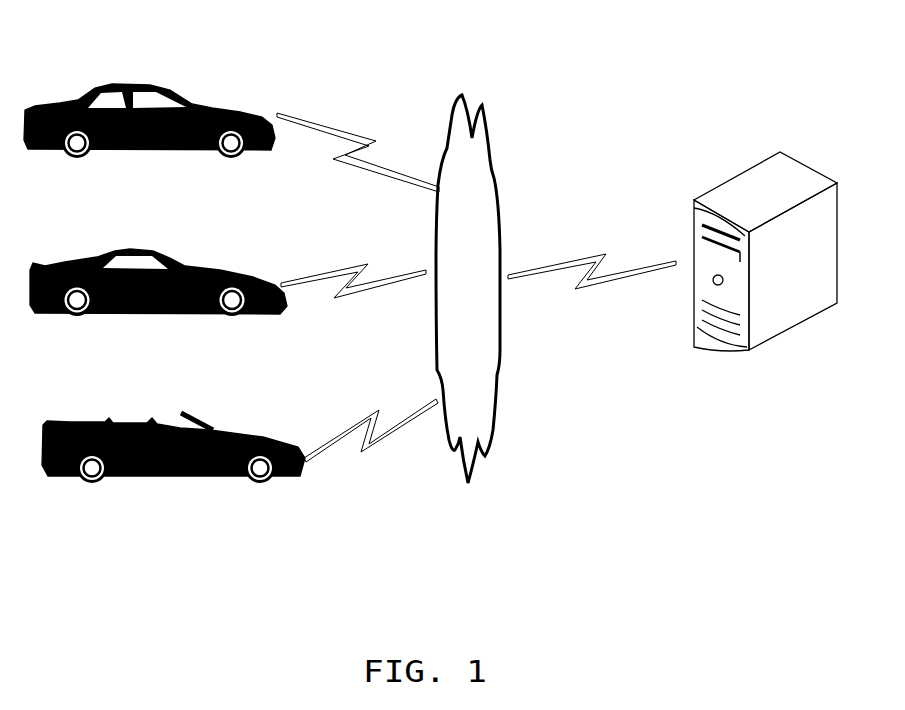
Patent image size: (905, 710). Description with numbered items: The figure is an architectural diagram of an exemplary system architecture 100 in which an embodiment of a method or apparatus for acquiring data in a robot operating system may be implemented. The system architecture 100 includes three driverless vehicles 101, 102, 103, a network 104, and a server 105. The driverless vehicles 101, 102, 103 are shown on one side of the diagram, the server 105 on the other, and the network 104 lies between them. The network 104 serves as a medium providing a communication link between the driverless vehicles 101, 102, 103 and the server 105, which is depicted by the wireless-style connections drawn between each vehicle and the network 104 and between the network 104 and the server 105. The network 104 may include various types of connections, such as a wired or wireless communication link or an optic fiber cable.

The system architecture 100 is at (757, 38).
The driverless vehicle 101 is at (256, 111).
The driverless vehicle 102 is at (258, 277).
The driverless vehicle 103 is at (280, 426).
The network 104 is at (503, 200).
The server 105 is at (694, 307).